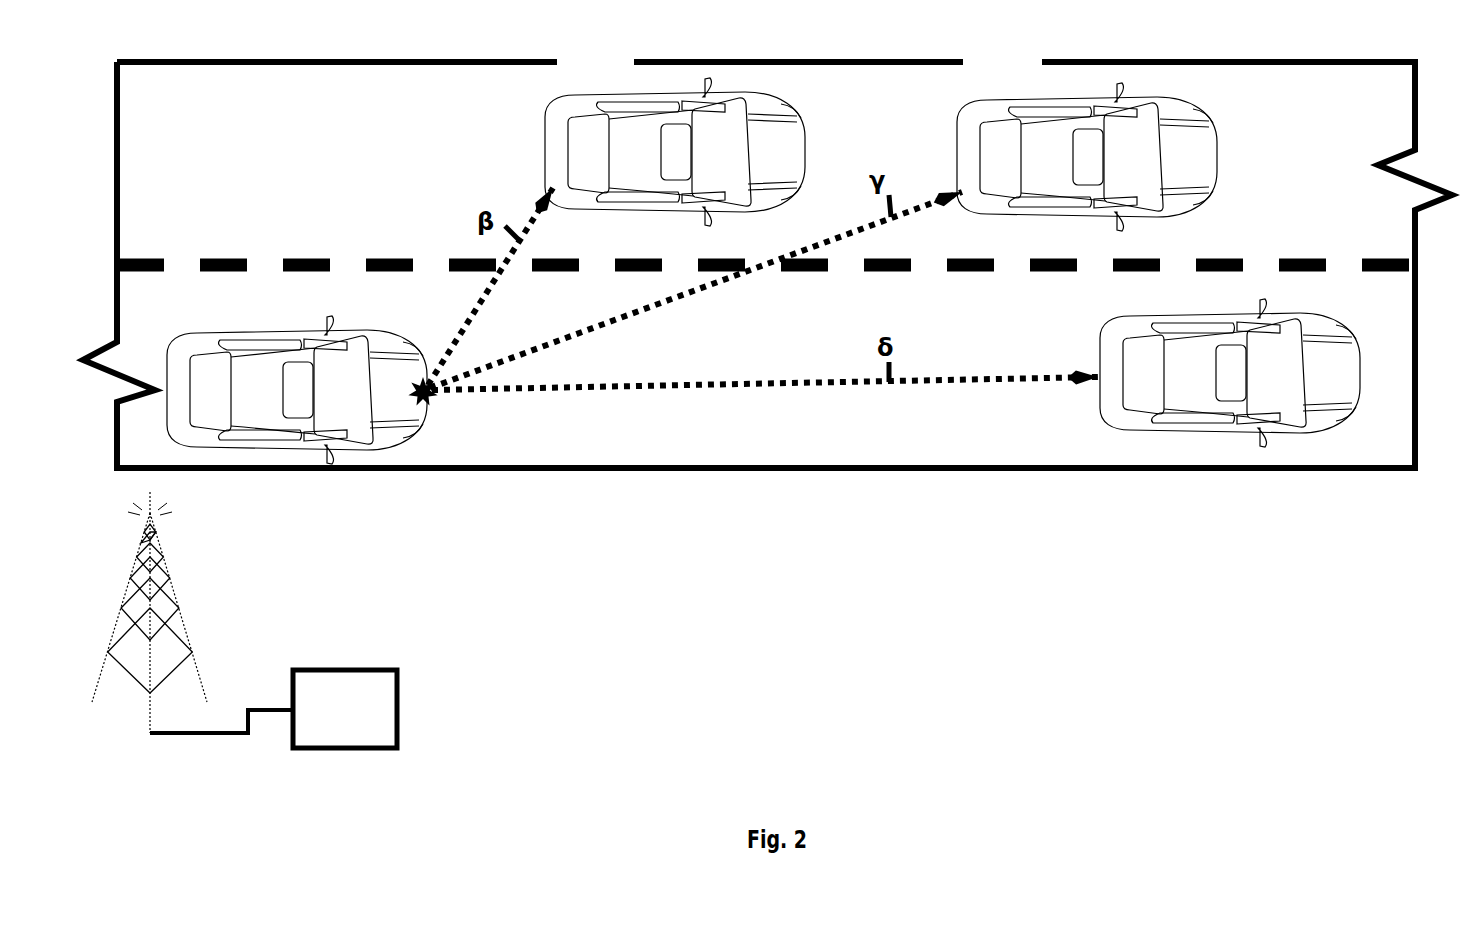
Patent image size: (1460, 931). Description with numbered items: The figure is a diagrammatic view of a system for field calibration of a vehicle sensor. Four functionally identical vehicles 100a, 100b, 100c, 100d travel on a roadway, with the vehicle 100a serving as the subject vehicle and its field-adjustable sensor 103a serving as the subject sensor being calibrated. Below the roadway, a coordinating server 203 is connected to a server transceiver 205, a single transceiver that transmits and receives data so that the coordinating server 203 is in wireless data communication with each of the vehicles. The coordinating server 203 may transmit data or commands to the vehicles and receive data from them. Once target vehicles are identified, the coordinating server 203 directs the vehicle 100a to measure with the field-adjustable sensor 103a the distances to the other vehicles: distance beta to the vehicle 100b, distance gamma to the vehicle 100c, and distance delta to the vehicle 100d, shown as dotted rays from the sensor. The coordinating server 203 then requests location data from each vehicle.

The vehicle 100a is at (243, 362).
The vehicle 100b is at (628, 130).
The vehicle 100c is at (1037, 137).
The vehicle 100d is at (1182, 360).
The field-adjustable sensor 103a is at (438, 440).
The server transceiver 205 is at (170, 601).
The coordinating server 203 is at (367, 728).